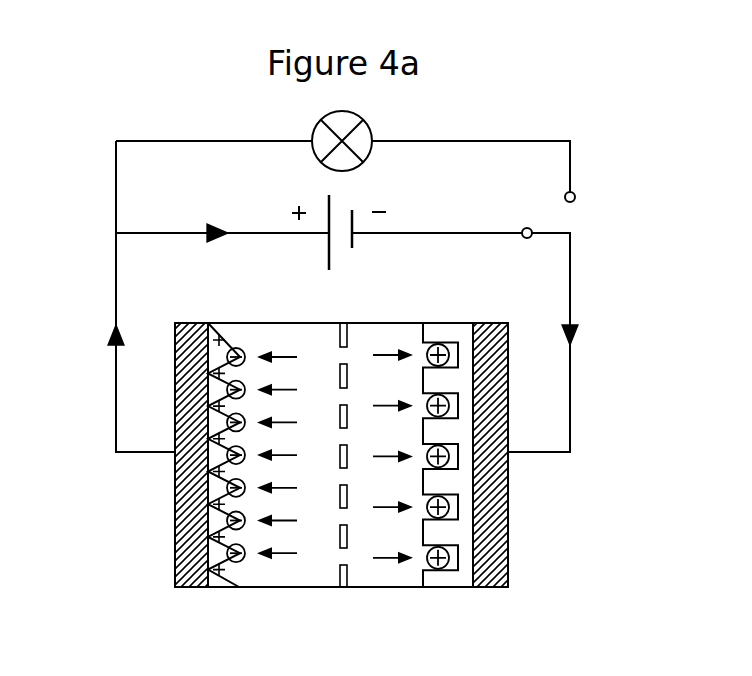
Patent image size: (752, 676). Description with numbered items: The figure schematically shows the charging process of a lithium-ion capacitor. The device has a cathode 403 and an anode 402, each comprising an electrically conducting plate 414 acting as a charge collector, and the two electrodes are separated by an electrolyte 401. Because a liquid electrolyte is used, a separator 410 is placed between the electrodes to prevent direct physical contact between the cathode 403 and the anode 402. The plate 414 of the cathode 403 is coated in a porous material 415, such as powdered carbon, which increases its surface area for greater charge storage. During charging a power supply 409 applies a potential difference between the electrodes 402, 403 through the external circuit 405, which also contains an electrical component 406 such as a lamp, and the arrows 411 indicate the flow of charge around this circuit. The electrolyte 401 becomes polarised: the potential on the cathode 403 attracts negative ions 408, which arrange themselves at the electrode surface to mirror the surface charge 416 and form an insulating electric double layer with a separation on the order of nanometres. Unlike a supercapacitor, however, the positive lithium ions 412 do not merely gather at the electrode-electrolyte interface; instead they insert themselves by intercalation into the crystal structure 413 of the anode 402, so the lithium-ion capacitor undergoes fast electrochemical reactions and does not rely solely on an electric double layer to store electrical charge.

The electrolyte 401 is at (314, 572).
The anode 402 is at (512, 461).
The cathode 403 is at (154, 468).
The external circuit 405 is at (485, 140).
The electrical component 406 is at (311, 131).
The negative ions 408 is at (234, 566).
The voltage source / battery 409 is at (372, 256).
The separator 410 is at (344, 588).
The current flow direction 411 is at (215, 224).
The lithium ions 412 is at (442, 568).
The crystal structure 413 is at (452, 333).
The electrically conducting plate 414 is at (187, 537).
The porous material 415 is at (218, 335).
The surface charge 416 is at (211, 576).